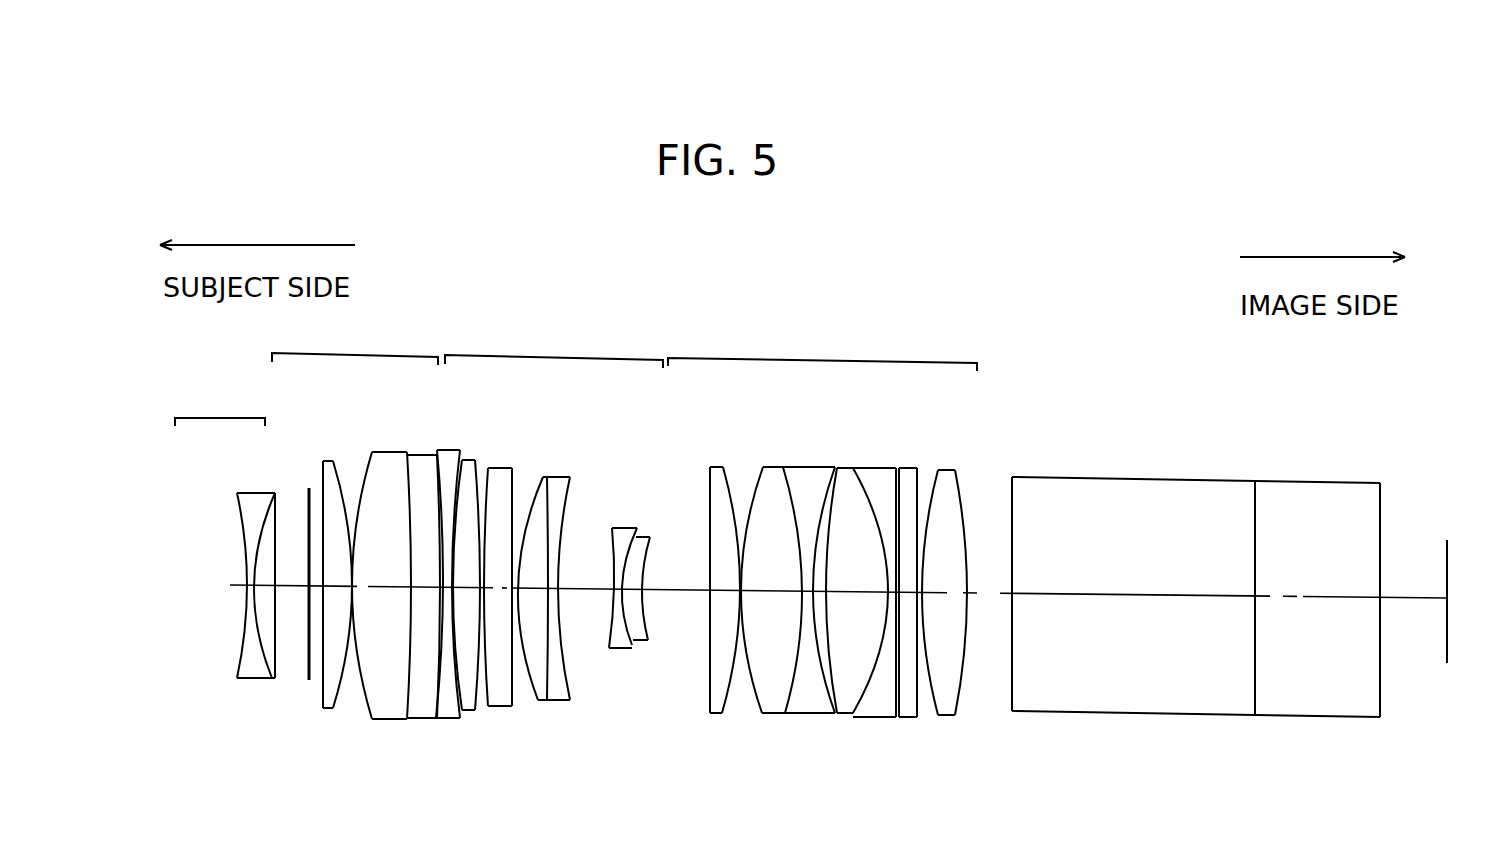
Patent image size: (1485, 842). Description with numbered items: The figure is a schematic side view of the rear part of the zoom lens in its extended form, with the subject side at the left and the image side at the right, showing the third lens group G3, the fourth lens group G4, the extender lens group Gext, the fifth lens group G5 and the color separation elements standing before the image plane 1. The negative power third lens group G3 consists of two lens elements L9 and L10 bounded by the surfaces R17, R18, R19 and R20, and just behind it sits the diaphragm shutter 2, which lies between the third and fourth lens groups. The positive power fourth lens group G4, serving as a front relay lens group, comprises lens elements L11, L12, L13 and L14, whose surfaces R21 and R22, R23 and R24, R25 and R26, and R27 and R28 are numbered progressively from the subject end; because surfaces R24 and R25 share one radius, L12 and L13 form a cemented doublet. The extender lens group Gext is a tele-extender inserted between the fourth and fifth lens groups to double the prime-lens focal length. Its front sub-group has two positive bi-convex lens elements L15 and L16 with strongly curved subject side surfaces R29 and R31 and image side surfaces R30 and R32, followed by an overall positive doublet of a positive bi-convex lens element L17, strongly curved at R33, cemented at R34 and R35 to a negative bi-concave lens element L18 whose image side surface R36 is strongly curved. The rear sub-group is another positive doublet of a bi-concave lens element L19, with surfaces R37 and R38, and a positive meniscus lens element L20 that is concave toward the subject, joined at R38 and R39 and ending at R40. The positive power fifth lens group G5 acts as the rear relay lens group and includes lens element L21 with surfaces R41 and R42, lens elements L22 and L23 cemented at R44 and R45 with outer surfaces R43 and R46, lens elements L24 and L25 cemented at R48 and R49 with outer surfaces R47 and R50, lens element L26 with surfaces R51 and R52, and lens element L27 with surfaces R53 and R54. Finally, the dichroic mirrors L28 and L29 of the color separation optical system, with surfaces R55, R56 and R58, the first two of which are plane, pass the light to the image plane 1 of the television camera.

The image plane 1 is at (1448, 545).
The diaphragm shutter 2 is at (308, 628).
The third lens group G3 is at (220, 400).
The fourth lens group G4 is at (355, 339).
The extender lens group Gext is at (554, 341).
The fifth lens group G5 is at (822, 345).
The lens element L9 is at (224, 559).
The lens element L10 is at (223, 582).
The lens element L11 is at (305, 588).
The lens element L12 is at (377, 607).
The lens element L13 is at (391, 571).
The lens element L14 is at (437, 590).
The positive bi-convex lens element L15 is at (486, 588).
The positive bi-convex lens element L16 is at (527, 607).
The positive bi-convex lens element L17 is at (610, 579).
The negative bi-concave lens element L18 is at (591, 572).
The bi-concave lens element L19 is at (639, 580).
The positive meniscus lens element L20 is at (668, 560).
The lens element L21 is at (696, 583).
The lens element L22 is at (761, 617).
The lens element L23 is at (806, 583).
The lens element L24 is at (875, 619).
The lens element L25 is at (905, 583).
The lens element L26 is at (919, 589).
The lens element L27 is at (978, 571).
The dichroic mirror L28 is at (1132, 571).
The dichroic mirror L29 is at (1293, 596).
The lens surface R17 is at (236, 652).
The lens surface R18 is at (201, 609).
The lens surface R19 is at (255, 655).
The lens surface R20 is at (280, 497).
The lens surface R21 is at (320, 682).
The lens surface R22 is at (333, 712).
The lens surface R23 is at (360, 705).
The lens surface R24 is at (379, 628).
The lens surface R25 is at (387, 720).
The lens surface R26 is at (410, 722).
The lens surface R27 is at (413, 452).
The lens surface R28 is at (445, 718).
The lens surface R29 is at (468, 712).
The lens surface R30 is at (488, 480).
The lens surface R31 is at (513, 710).
The lens surface R32 is at (536, 705).
The lens surface R33 is at (530, 690).
The lens surface R34 is at (624, 613).
The lens surface R35 is at (555, 702).
The lens surface R36 is at (563, 528).
The lens surface R37 is at (608, 636).
The lens surface R38 is at (639, 621).
The lens surface R39 is at (632, 650).
The lens surface R40 is at (646, 565).
The lens surface R41 is at (709, 668).
The lens surface R42 is at (725, 715).
The lens surface R43 is at (760, 713).
The lens surface R44 is at (761, 646).
The lens surface R45 is at (790, 715).
The lens surface R46 is at (836, 715).
The lens surface R47 is at (843, 715).
The lens surface R48 is at (892, 646).
The lens surface R49 is at (885, 717).
The lens surface R50 is at (897, 718).
The lens surface R51 is at (898, 470).
The lens surface R52 is at (905, 717).
The lens surface R53 is at (940, 478).
The lens surface R54 is at (960, 715).
The plane surface R55 is at (1012, 540).
The plane surface R56 is at (1219, 623).
The surface R58 is at (1378, 690).